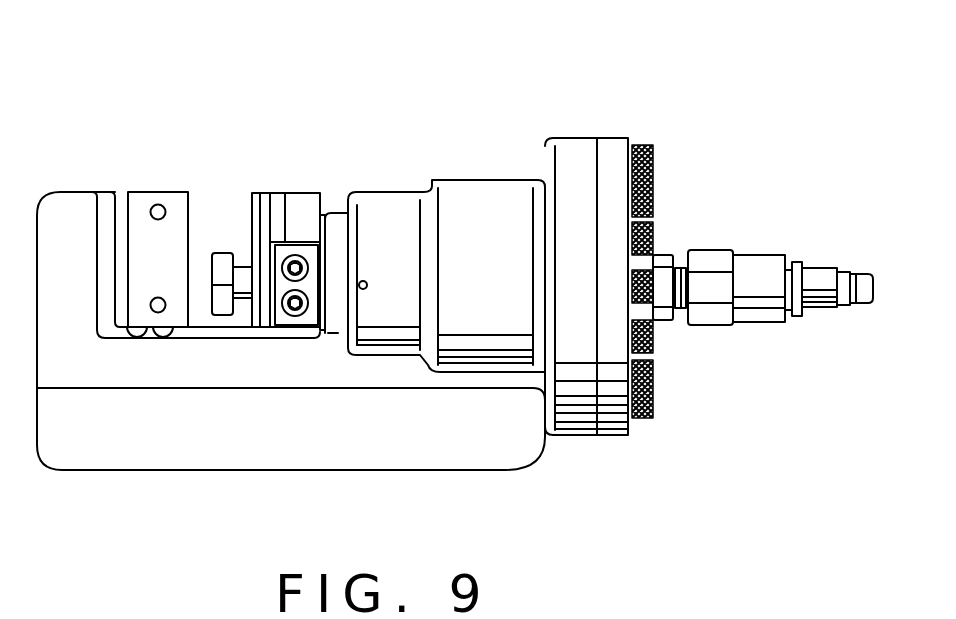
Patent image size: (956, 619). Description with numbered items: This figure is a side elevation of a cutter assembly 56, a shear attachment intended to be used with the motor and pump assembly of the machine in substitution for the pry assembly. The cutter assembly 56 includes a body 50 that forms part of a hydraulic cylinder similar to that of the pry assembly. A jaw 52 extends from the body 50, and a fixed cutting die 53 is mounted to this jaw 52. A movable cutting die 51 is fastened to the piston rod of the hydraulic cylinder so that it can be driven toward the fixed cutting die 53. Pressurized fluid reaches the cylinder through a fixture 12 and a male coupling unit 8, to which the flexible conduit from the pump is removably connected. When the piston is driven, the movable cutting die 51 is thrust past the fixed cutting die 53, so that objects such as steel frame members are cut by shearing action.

The cutter assembly 56 is at (413, 120).
The jaw 52 is at (278, 447).
The fixed cutting die 53 is at (172, 197).
The movable cutting die 51 is at (267, 197).
The body 50 is at (478, 197).
The fixture 12 is at (707, 270).
The male coupling unit 8 is at (753, 312).